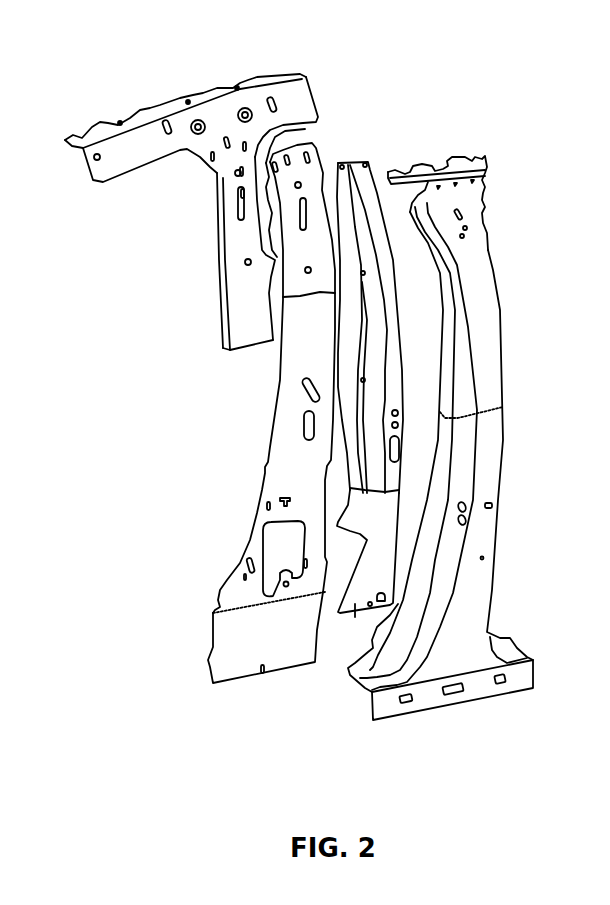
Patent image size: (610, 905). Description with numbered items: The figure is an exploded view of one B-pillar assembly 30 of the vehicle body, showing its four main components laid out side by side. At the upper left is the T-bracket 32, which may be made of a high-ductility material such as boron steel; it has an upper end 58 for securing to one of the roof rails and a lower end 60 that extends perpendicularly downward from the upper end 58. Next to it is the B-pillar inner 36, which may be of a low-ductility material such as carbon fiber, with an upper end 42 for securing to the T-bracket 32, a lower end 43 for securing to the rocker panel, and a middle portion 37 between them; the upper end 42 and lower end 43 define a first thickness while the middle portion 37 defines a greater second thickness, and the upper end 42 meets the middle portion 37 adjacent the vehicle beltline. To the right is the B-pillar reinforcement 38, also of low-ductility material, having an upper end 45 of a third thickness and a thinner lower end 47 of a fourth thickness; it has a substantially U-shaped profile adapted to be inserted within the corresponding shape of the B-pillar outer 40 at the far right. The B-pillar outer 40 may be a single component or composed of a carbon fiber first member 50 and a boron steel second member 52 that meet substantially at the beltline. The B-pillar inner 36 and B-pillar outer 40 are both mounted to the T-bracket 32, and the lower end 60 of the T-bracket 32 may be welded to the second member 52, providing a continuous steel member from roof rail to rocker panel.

The B-pillar assembly 30 is at (422, 34).
The T-bracket 32 is at (259, 66).
The B-pillar inner 36 is at (196, 660).
The middle portion 37 is at (264, 447).
The B-pillar reinforcement 38 is at (375, 147).
The B-pillar outer 40 is at (485, 148).
The upper end 42 is at (277, 352).
The lower end 43 is at (210, 615).
The upper end 45 is at (403, 303).
The lower end 47 is at (352, 616).
The first member 50 is at (502, 308).
The second member 52 is at (506, 470).
The upper end 58 is at (147, 108).
The lower end 60 is at (219, 312).